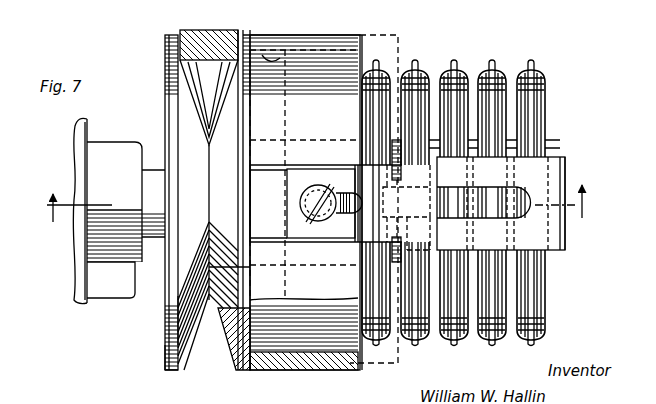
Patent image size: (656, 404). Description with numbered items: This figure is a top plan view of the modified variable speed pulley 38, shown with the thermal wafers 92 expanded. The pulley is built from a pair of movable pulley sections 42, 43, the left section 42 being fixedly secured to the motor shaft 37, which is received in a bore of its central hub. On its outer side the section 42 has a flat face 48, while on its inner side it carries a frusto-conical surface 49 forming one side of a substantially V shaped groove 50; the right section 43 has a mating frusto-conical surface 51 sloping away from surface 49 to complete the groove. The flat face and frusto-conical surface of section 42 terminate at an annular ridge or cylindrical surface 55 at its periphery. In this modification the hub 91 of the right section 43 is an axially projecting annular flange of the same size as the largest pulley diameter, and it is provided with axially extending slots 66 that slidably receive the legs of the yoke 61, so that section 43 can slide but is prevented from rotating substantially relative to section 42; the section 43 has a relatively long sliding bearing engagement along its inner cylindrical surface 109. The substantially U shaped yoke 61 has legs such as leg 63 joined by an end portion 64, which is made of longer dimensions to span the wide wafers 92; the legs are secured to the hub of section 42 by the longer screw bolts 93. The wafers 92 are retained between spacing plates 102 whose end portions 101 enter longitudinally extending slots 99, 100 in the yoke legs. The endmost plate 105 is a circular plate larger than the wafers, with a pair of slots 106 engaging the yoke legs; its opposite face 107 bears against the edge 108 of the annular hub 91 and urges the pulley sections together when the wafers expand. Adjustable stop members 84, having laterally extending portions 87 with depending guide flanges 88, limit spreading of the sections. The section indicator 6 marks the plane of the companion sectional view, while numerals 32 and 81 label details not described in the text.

The shaft hub 32 is at (76, 160).
The motor shaft 37 is at (148, 187).
The section line 6 is at (311, 203).
The pulley section 42 is at (167, 50).
The flat face 48 is at (166, 306).
The variable speed pulley 38 is at (163, 346).
The cylindrical surface 55 is at (172, 372).
The pulley section 43 is at (222, 72).
The frusto-conical surface 49 is at (194, 338).
The V shaped groove 50 is at (210, 312).
The frusto-conical surface 51 is at (228, 356).
The endmost plate 105 is at (354, 318).
The inner cylindrical surface 109 is at (268, 52).
The hub 91 is at (312, 48).
The opposite face 107 is at (352, 45).
The leg 63 is at (372, 1).
The stop member 84 is at (418, 0).
The slot 100 is at (500, 8).
The edge 108 is at (356, 366).
The slot 66 is at (266, 187).
The screw bolt 93 is at (322, 220).
The laterally extending portion 87 is at (428, 158).
The guide flange 88 is at (417, 268).
The thermal wafer 92 is at (500, 104).
The spacing plate 102 is at (455, 148).
The slot 99 is at (530, 192).
The slot 106 is at (414, 178).
The fin member 81 is at (440, 150).
The yoke 61 is at (537, 238).
The end portion 101 is at (471, 207).
The end portion 64 is at (567, 171).